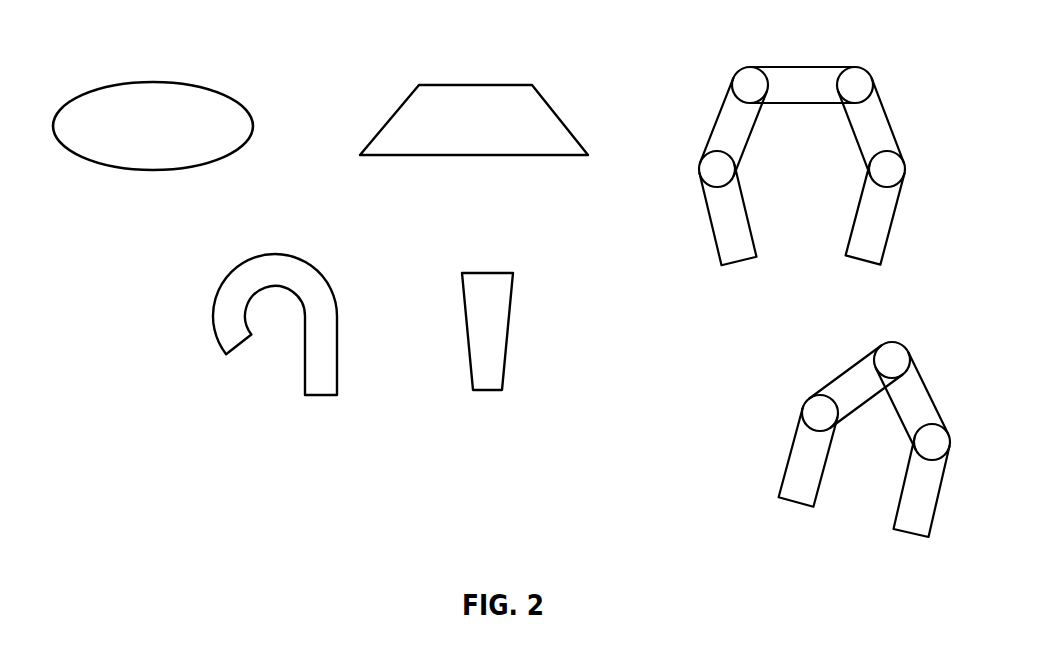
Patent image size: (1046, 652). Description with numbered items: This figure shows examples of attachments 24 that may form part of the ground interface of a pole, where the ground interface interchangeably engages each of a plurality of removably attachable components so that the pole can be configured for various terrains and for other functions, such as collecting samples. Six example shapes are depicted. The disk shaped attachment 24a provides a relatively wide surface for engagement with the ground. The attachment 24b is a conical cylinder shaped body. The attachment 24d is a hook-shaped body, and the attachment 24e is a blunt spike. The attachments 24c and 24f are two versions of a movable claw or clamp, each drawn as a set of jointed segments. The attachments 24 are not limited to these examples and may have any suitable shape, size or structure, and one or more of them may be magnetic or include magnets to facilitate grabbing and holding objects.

The attachments 24 is at (131, 36).
The disk shaped attachment 24a is at (217, 101).
The conical cylinder shaped body attachment 24b is at (485, 100).
The movable claw or clamp attachment 24c is at (803, 80).
The hook-shaped body attachment 24d is at (282, 270).
The blunt spike attachment 24e is at (490, 285).
The movable claw or clamp attachment 24f is at (852, 380).